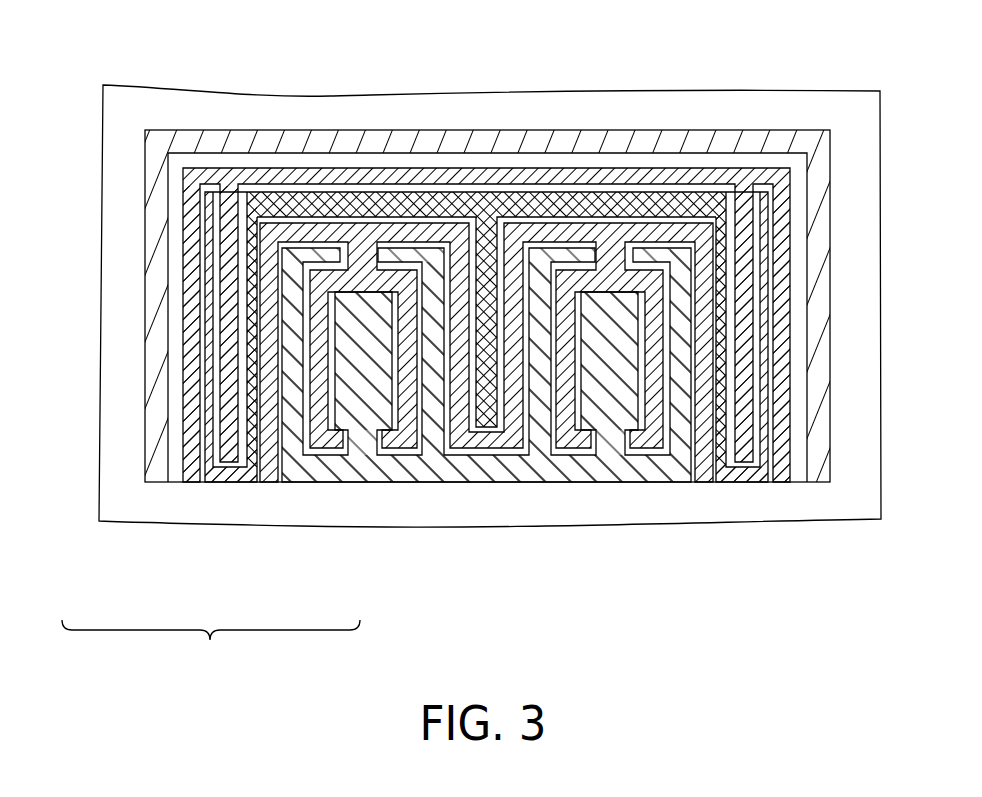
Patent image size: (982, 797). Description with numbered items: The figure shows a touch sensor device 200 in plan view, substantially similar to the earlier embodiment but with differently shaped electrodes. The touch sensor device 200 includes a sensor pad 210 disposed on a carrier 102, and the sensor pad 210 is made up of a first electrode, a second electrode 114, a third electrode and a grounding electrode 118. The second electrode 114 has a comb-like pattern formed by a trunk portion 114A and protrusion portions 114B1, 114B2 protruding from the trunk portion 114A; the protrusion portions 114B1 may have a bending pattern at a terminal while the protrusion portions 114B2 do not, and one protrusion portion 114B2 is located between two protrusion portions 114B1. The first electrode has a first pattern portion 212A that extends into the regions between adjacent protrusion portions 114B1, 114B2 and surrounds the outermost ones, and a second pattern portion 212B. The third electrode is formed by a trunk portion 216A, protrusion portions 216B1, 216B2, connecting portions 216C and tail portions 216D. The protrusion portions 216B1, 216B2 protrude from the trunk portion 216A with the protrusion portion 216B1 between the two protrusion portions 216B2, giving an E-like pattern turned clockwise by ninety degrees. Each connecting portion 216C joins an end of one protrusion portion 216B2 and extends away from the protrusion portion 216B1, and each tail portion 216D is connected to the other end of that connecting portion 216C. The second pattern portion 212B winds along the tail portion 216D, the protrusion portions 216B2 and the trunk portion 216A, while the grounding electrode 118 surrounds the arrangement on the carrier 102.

The carrier 102 is at (732, 408).
The grounding electrode 118 is at (157, 449).
The second electrode 114 is at (365, 405).
The trunk portion 114A is at (487, 470).
The protrusion portion 114B1 is at (612, 398).
The protrusion portion 114B2 is at (538, 400).
The first pattern portion 212A is at (320, 408).
The second pattern portion 212B is at (195, 460).
The trunk portion 216A is at (395, 172).
The protrusion portion 216B1 is at (483, 240).
The protrusion portion 216B2 is at (248, 228).
The connecting portion 216C is at (228, 477).
The tail portion 216D is at (210, 228).
The sensor pad 210 is at (211, 644).
The touch sensor device 200 is at (948, 617).